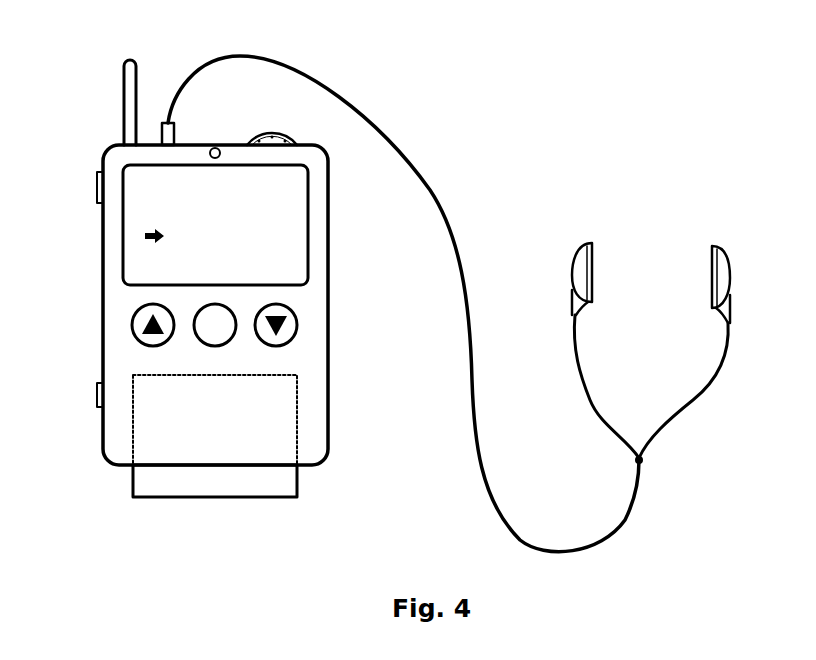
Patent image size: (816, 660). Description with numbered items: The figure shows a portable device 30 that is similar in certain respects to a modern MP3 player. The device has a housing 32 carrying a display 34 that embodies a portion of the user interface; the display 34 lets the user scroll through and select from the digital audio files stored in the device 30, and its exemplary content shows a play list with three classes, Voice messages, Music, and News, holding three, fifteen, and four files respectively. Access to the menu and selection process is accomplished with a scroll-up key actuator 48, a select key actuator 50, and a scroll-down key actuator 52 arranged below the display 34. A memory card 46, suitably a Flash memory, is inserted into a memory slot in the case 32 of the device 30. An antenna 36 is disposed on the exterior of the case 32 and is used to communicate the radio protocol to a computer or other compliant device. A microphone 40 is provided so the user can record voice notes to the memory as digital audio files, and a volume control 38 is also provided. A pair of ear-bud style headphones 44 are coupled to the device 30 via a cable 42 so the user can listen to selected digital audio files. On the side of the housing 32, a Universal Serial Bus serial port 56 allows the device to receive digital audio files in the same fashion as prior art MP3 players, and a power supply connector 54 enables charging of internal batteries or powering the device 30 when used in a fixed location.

The portable device 30 is at (33, 511).
The housing 32 is at (103, 310).
The display 34 is at (123, 250).
The antenna 36 is at (124, 88).
The volume control 38 is at (290, 140).
The microphone 40 is at (219, 149).
The cable 42 is at (445, 212).
The ear-bud style headphones 44 is at (712, 262).
The memory card 46 is at (182, 497).
The scroll-up key actuator 48 is at (147, 344).
The select key actuator 50 is at (208, 344).
The scroll-down key actuator 52 is at (270, 344).
The power supply connector 54 is at (97, 400).
The Universal Serial Bus serial port 56 is at (97, 188).